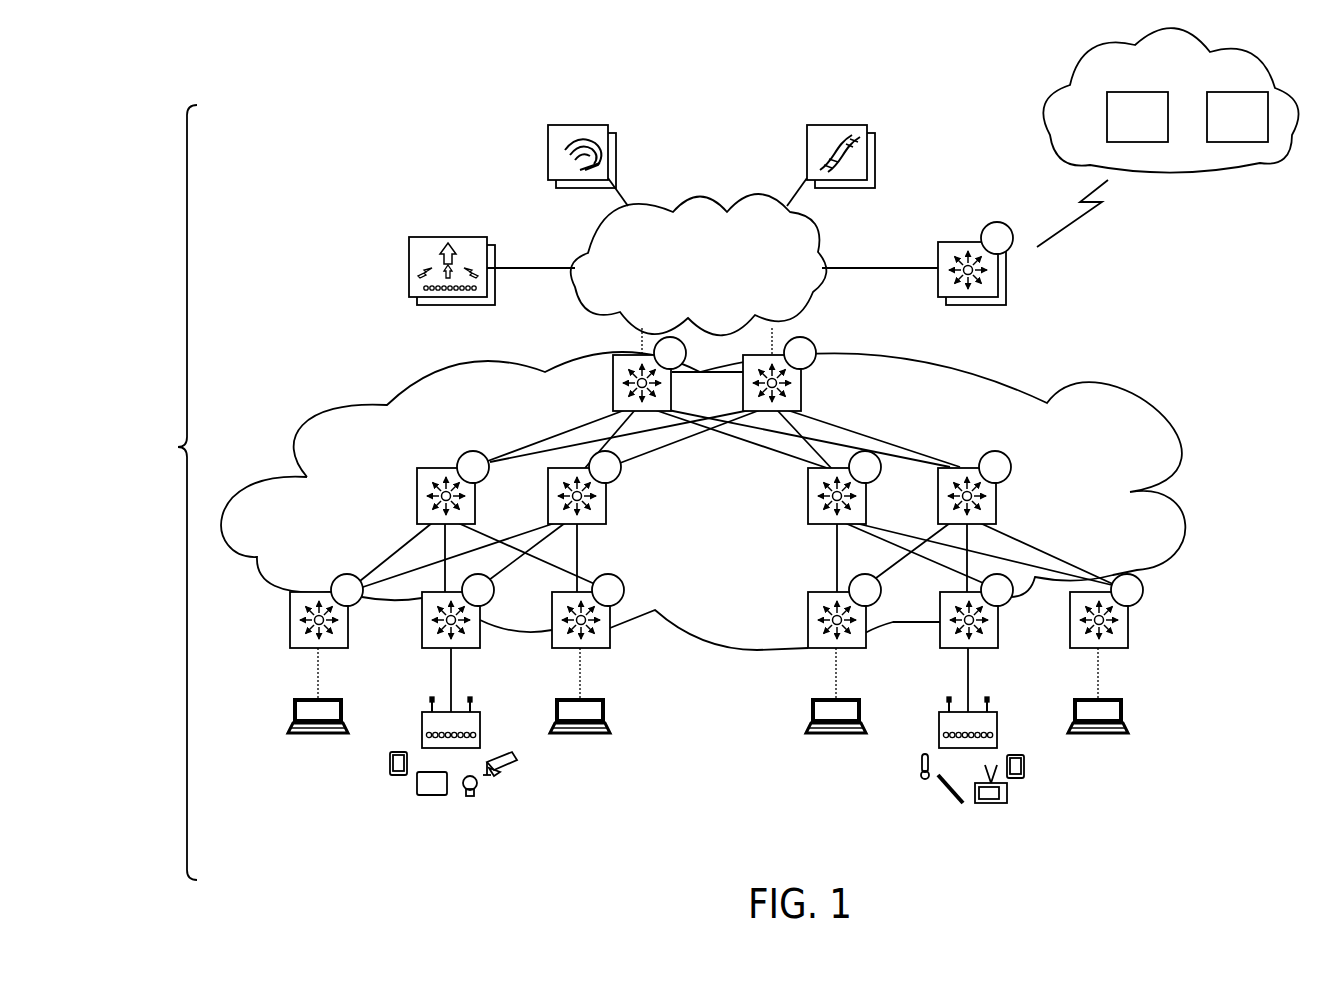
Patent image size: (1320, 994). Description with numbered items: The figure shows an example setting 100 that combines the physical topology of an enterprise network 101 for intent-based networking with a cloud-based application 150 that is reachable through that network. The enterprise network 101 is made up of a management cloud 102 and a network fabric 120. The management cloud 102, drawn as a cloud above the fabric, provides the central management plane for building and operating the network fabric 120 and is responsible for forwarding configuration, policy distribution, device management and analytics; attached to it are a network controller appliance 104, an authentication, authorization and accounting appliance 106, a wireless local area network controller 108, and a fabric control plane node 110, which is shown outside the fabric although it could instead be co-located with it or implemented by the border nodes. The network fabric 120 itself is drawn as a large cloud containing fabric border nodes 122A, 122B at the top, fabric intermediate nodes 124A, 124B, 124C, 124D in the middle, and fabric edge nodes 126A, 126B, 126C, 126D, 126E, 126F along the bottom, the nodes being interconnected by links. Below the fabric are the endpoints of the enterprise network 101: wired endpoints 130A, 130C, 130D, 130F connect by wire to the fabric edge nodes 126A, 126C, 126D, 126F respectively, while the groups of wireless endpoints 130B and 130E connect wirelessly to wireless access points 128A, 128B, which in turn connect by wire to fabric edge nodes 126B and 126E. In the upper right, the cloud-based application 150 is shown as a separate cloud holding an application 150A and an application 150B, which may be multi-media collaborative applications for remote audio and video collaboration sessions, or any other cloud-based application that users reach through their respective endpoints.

The example setting 100 is at (388, 117).
The enterprise network 101 is at (166, 492).
The management cloud 102 is at (582, 247).
The network controller appliance 104 is at (807, 152).
The authentication, authorization, and accounting (AAA) appliance 106 is at (548, 151).
The wireless local area network controller (WLC) 108 is at (409, 268).
The fabric control plane node 110 is at (938, 256).
The network fabric 120 is at (723, 514).
The fabric border node 122A is at (613, 360).
The fabric border node 122B is at (816, 360).
The fabric intermediate node 124A is at (417, 497).
The fabric intermediate node 124B is at (607, 522).
The fabric intermediate node 124C is at (808, 520).
The fabric intermediate node 124D is at (995, 502).
The fabric edge node 126A is at (292, 647).
The fabric edge node 126B is at (428, 649).
The fabric edge node 126C is at (612, 644).
The fabric edge node 126D is at (858, 649).
The fabric edge node 126E is at (990, 649).
The fabric edge node 126F is at (1118, 649).
The wireless access point 128A is at (478, 708).
The wireless access point 128B is at (939, 729).
The wired endpoint 130A is at (305, 735).
The wireless endpoint 130B is at (382, 804).
The wired endpoint 130C is at (572, 735).
The wired endpoint 130D is at (826, 735).
The wireless endpoint 130E is at (900, 804).
The wired endpoint 130F is at (1098, 735).
The cloud-based application 150 is at (1142, 100).
The application 150A is at (1158, 131).
The application 150B is at (1258, 131).